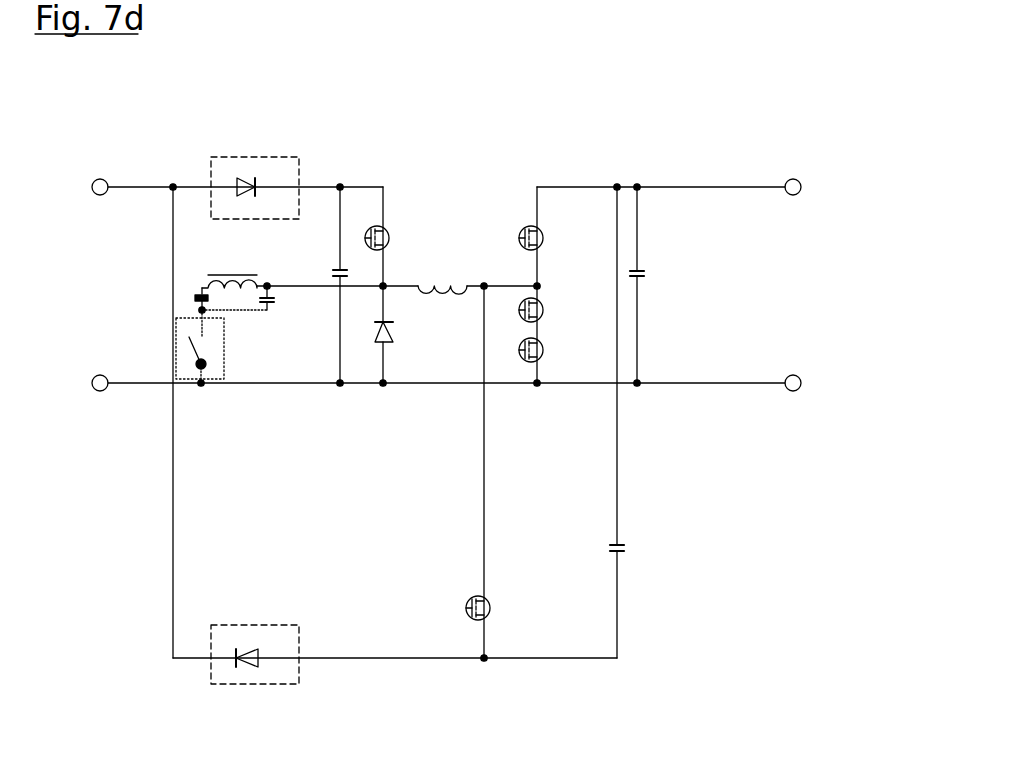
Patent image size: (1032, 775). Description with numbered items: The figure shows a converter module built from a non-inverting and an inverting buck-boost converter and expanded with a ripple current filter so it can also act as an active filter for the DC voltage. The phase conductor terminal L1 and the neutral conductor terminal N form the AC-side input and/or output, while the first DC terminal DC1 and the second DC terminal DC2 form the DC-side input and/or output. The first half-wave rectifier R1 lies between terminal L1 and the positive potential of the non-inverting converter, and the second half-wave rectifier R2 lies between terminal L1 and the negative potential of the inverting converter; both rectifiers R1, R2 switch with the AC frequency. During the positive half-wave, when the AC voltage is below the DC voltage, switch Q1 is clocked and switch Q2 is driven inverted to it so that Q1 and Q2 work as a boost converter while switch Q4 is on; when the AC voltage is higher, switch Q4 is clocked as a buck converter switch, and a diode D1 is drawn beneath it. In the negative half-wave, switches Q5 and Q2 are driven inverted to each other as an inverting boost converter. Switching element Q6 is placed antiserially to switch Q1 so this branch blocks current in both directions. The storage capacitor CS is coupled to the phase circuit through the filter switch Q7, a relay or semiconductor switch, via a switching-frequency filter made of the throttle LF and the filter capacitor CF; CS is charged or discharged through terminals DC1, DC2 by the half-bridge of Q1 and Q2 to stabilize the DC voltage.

The phase conductor terminal L1 is at (209, 188).
The neutral conductor terminal N is at (410, 384).
The first DC terminal DC1 is at (731, 188).
The second DC terminal DC2 is at (855, 384).
The first half-wave rectifier R1 is at (255, 167).
The second half-wave rectifier R2 is at (255, 639).
The throttle LF is at (229, 270).
The storage capacitor CS is at (218, 308).
The filter capacitor CF is at (280, 312).
The filter switch Q7 is at (226, 346).
The switch Q4 is at (400, 239).
The diode D1 is at (405, 337).
The switching element Q2 is at (559, 239).
The switching element Q6 is at (559, 311).
The switch Q1 is at (559, 351).
The switch Q5 is at (456, 609).